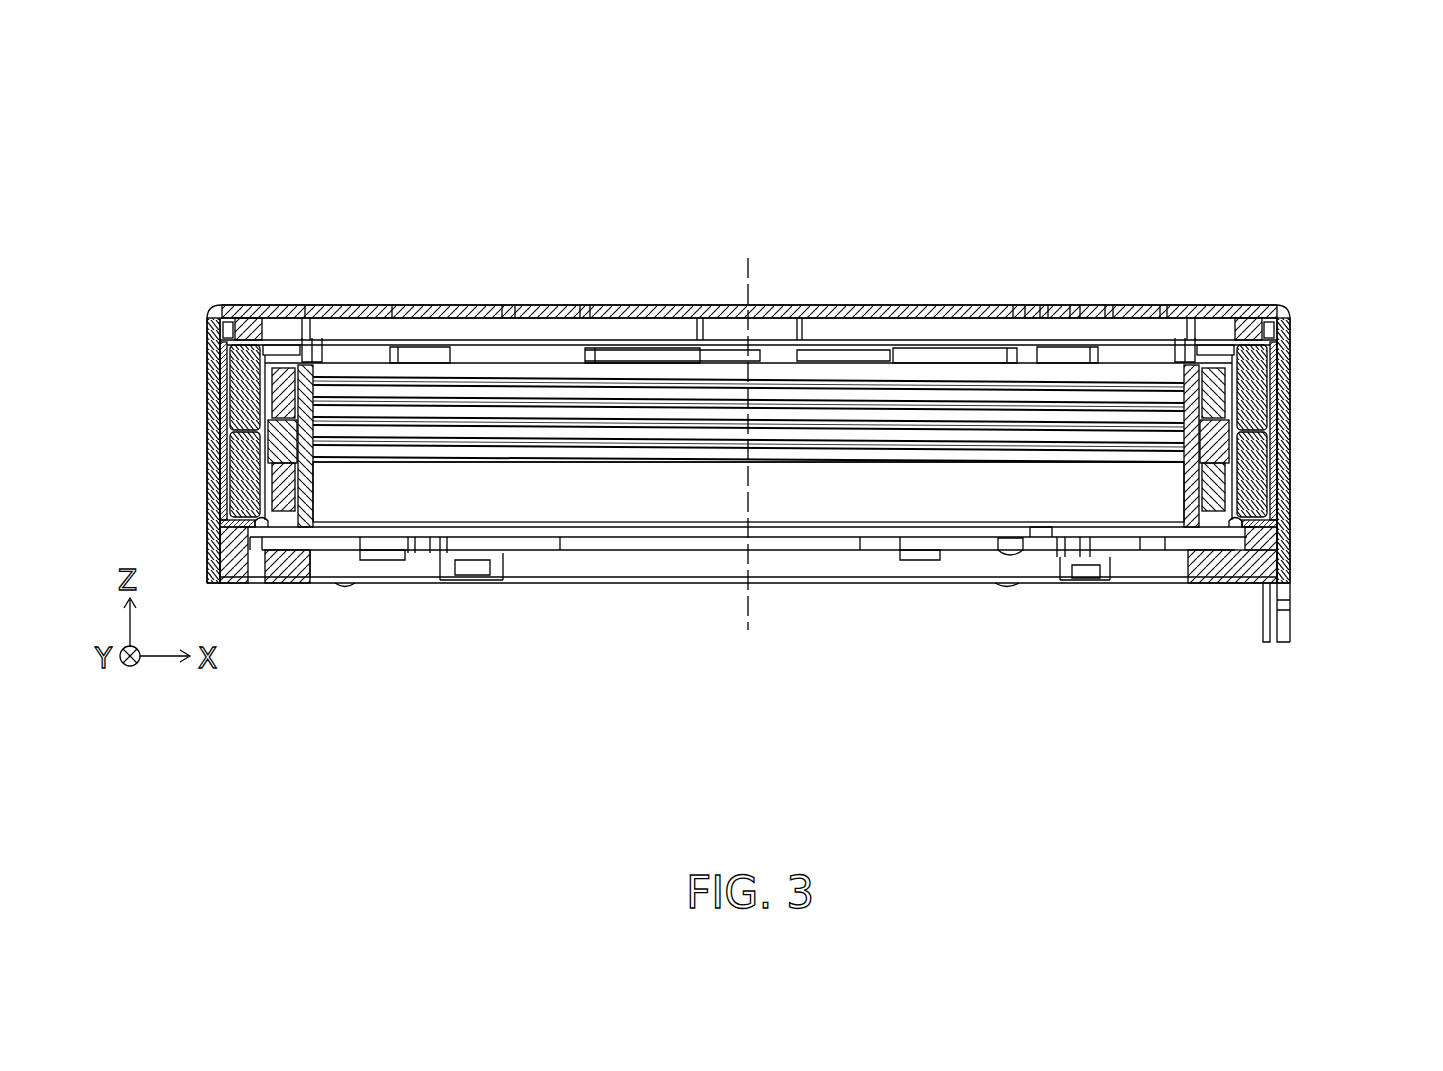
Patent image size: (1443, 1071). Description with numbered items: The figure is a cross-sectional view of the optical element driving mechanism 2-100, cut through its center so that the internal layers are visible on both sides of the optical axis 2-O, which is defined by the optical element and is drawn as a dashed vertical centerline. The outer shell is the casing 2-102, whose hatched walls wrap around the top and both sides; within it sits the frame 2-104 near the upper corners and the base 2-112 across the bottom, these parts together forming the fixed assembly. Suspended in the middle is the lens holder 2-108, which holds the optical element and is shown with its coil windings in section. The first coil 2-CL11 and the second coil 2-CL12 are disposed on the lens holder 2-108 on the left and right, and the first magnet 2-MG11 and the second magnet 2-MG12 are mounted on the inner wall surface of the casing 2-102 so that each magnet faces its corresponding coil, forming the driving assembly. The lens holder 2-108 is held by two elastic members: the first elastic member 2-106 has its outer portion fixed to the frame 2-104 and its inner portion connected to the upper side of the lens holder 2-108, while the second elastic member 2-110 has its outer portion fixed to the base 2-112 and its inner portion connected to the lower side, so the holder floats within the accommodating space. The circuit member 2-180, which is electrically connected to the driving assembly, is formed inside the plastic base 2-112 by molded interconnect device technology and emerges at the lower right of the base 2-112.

The optical element driving mechanism 2-100 is at (277, 53).
The casing 2-102 is at (1283, 320).
The frame 2-104 is at (1260, 328).
The first elastic member 2-106 is at (1217, 342).
The lens holder 2-108 is at (946, 383).
The second elastic member 2-110 is at (1047, 536).
The base 2-112 is at (1213, 585).
The circuit member 2-180 is at (1283, 627).
The first magnet 2-MG11 is at (243, 480).
The second magnet 2-MG12 is at (1258, 386).
The first coil 2-CL11 is at (288, 396).
The second coil 2-CL12 is at (1212, 487).
The optical axis 2-O is at (748, 428).